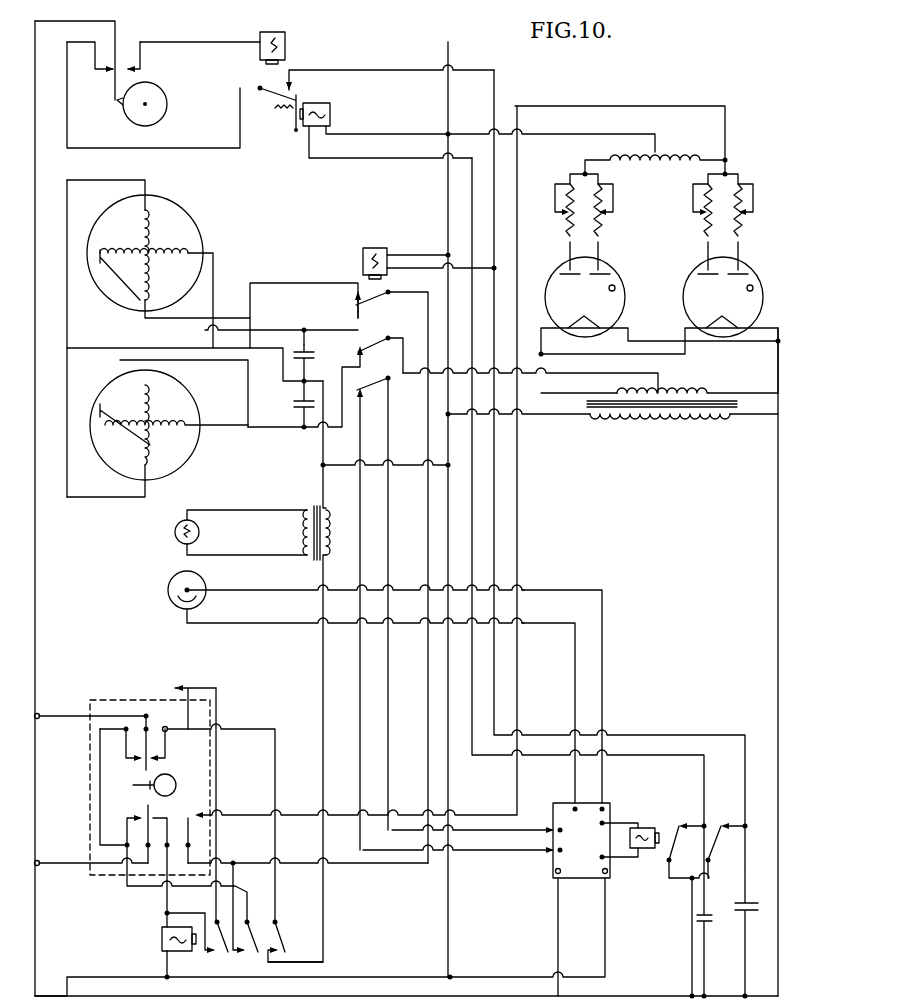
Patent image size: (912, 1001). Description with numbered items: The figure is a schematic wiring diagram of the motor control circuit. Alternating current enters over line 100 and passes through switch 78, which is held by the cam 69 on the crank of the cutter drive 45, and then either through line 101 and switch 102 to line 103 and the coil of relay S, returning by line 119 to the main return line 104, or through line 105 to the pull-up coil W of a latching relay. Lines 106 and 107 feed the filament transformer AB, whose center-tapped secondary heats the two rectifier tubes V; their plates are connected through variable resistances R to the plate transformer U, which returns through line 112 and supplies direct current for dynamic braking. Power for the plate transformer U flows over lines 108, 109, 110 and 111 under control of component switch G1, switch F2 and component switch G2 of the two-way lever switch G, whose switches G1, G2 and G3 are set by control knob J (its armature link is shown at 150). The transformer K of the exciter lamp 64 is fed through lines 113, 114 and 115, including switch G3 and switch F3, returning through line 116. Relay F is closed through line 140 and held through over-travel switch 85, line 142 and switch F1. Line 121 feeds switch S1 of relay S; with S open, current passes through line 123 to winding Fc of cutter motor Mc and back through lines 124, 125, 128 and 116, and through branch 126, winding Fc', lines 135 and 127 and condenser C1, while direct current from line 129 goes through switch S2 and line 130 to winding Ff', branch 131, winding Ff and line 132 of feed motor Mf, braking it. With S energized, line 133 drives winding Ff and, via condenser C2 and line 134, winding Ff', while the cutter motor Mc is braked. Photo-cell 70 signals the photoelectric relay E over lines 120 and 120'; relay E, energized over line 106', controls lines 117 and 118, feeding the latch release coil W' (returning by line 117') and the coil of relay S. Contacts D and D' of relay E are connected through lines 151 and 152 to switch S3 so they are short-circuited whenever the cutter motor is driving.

The line 100 is at (36, 600).
The switch 78 is at (122, 62).
The line 105 is at (216, 40).
The line 101 is at (67, 108).
The cutter drive 45 is at (160, 108).
The cam 69 is at (122, 110).
The pull-up coil W is at (273, 36).
The switch 102 is at (262, 86).
The latch release coil W' is at (390, 111).
The line 117' is at (490, 128).
The line 112 is at (575, 135).
The plate transformer U is at (665, 158).
The variable resistance R is at (567, 228).
The rectifier tubes V is at (688, 282).
The filament transformer AB is at (690, 418).
The line 124 is at (67, 247).
The cutter driving motor Mc is at (185, 222).
The winding Fc is at (162, 255).
The winding Fc' is at (144, 240).
The branch 126 is at (118, 290).
The line 125 is at (128, 348).
The line 135 is at (205, 332).
The line 123 is at (290, 318).
The line 127 is at (307, 344).
The condenser C1 is at (310, 358).
The line 134 is at (303, 382).
The condenser C2 is at (294, 405).
The line 130 is at (300, 430).
The line 128 is at (325, 444).
The line 115 is at (321, 684).
The line 121 is at (345, 865).
The relay S is at (366, 248).
The line 119 is at (420, 254).
The line 103 is at (426, 270).
The switch S1 is at (368, 300).
The switch S2 is at (366, 350).
The switch S3 is at (368, 388).
The line 129 is at (416, 375).
The line 116 is at (404, 468).
The transformer K is at (315, 507).
The exciter lamp 64 is at (175, 528).
The photo-cell 70 is at (168, 585).
The line 120 is at (562, 684).
The line 120' is at (548, 713).
The line 111 is at (519, 533).
The line 107 is at (778, 630).
The over-travel switch 85 is at (197, 690).
The line 142 is at (218, 780).
The line 113 is at (73, 716).
The two-way lever composite switch G is at (90, 745).
The component switch G3 is at (142, 726).
The line 114 is at (270, 729).
The armature 150 is at (134, 783).
The control knob J is at (175, 781).
The component switch G1 is at (140, 812).
The line 110 is at (168, 818).
The component switch G2 is at (189, 815).
The line 108 is at (74, 863).
The line 109 is at (150, 887).
The line 140 is at (170, 904).
The relay F is at (162, 940).
The switch F1 is at (227, 954).
The switch F2 is at (257, 954).
The switch F3 is at (283, 942).
The main return line 104 is at (379, 977).
The line 106 is at (406, 985).
The line 106' is at (536, 937).
The contact D is at (552, 858).
The photoelectric relay E is at (662, 825).
The line 118 is at (676, 735).
The line 117 is at (576, 509).
The line 151 is at (362, 668).
The line 152 is at (390, 664).
The line 132 is at (120, 360).
The branch 131 is at (143, 383).
The line 133 is at (225, 362).
The feed motor Mf is at (190, 462).
The winding Ff is at (129, 425).
The winding Ff' is at (174, 422).